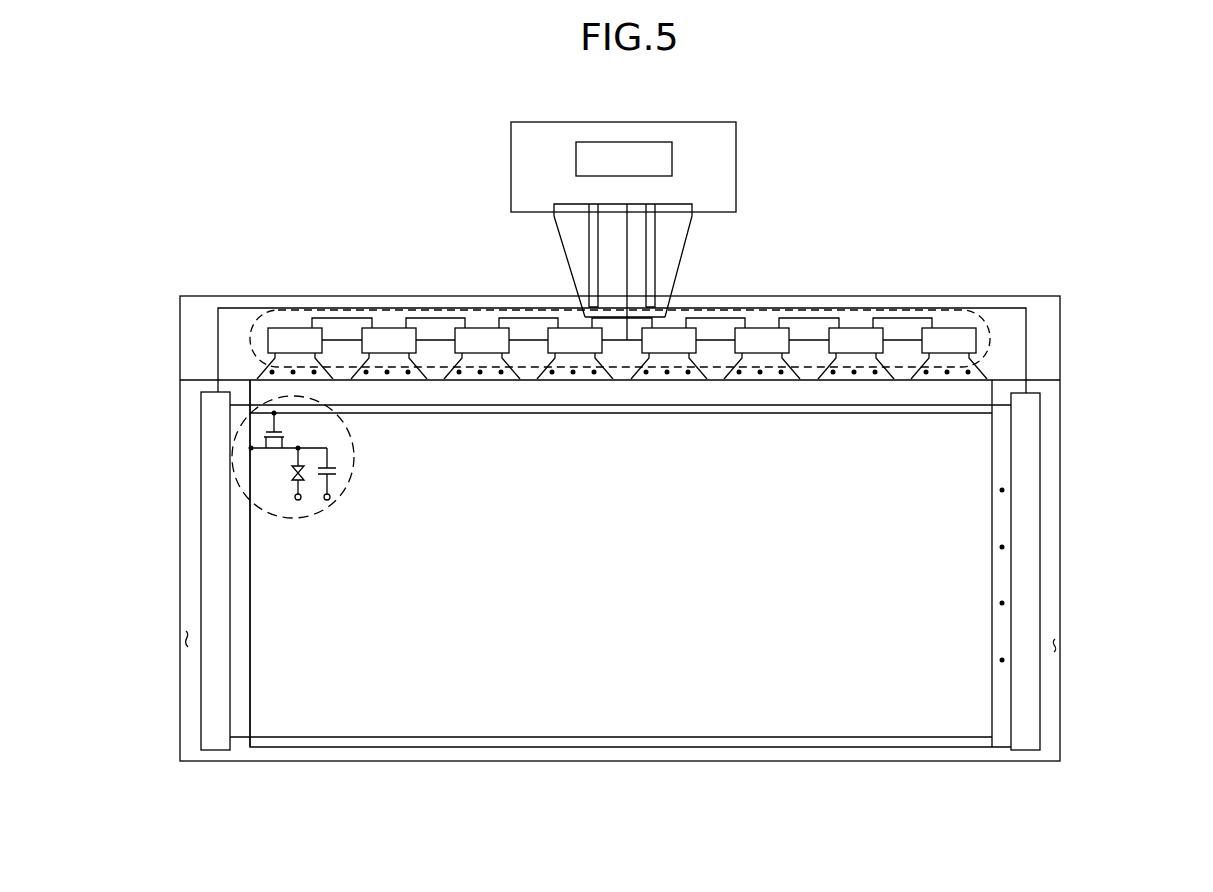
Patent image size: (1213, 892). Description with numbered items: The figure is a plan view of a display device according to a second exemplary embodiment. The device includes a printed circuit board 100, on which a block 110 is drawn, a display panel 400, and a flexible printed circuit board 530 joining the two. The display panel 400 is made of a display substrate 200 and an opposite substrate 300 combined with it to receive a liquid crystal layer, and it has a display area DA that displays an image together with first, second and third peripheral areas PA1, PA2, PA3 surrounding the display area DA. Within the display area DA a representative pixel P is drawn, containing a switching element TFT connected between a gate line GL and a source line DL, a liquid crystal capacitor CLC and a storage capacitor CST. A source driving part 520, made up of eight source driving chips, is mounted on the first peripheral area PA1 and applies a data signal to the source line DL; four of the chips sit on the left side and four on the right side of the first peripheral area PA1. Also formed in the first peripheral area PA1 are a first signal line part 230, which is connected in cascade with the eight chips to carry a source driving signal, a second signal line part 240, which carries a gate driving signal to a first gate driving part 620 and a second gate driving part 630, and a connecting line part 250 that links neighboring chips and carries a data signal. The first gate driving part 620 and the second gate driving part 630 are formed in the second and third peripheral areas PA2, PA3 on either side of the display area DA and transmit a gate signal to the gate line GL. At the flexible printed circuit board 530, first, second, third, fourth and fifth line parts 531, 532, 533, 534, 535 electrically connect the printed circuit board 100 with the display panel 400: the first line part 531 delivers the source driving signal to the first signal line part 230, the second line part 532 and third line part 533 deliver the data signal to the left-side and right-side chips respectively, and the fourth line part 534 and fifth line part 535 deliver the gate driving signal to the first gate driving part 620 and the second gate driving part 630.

The printed circuit board 100 is at (736, 134).
The timing controller 110 is at (672, 157).
The display substrate 200 is at (1050, 343).
The first signal line part 230 is at (342, 338).
The second signal line part 240 is at (250, 307).
The connecting line part 250 is at (318, 318).
The opposite substrate 300 is at (1043, 381).
The display panel 400 is at (1147, 333).
The source driving part 520 is at (250, 337).
The flexible printed circuit board 530 is at (683, 250).
The first line part 531 is at (620, 277).
The second line part 532 is at (588, 219).
The third line part 533 is at (656, 277).
The fourth line part 534 is at (598, 237).
The fifth line part 535 is at (648, 226).
The first gate driving part 620 is at (213, 571).
The second gate driving part 630 is at (1033, 493).
The first peripheral area PA1 is at (882, 301).
The second peripheral area PA2 is at (186, 637).
The third peripheral area PA3 is at (1056, 645).
The display area DA is at (628, 582).
The gate line GL is at (622, 418).
The source line DL is at (252, 613).
The pixel P is at (317, 481).
The thin film transistor TFT is at (288, 431).
The liquid crystal capacitor CLC is at (278, 474).
The storage capacitor CST is at (337, 466).